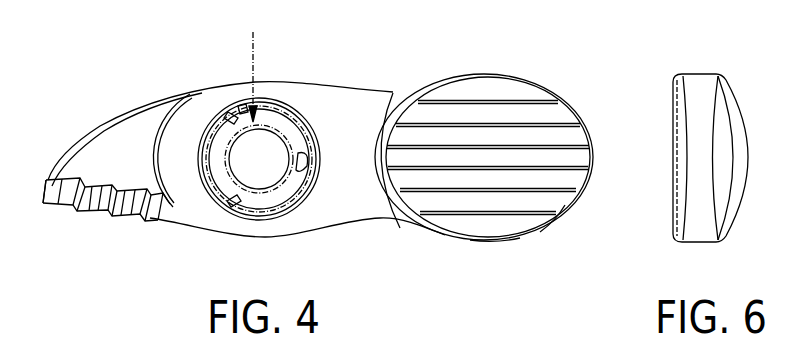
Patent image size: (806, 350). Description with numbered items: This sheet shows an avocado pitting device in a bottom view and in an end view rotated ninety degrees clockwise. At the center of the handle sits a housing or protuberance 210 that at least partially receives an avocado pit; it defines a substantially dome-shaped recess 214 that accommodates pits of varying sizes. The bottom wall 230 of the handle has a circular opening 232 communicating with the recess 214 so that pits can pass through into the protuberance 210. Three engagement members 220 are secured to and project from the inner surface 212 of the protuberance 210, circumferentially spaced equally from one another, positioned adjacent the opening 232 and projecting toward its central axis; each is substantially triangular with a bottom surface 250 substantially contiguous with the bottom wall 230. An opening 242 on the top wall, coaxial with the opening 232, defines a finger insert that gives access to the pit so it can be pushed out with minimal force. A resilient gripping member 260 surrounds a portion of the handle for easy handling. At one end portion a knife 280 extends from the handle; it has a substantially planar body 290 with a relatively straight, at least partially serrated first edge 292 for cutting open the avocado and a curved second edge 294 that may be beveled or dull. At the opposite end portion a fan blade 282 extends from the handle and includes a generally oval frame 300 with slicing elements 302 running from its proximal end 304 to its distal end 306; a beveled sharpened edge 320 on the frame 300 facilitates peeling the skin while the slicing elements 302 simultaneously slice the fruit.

In FIG. 4, the protuberance 210 is at (263, 117).
In FIG. 6, the protuberance 210 is at (735, 110).
In FIG. 4, the inner surface 212 is at (288, 127).
In FIG. 4, the recess 214 is at (255, 65).
In FIG. 4, the engagement members 220 is at (228, 120).
In FIG. 4, the bottom wall 230 is at (240, 105).
In FIG. 4, the opening 232 is at (245, 205).
In FIG. 4, the opening 242 is at (273, 183).
In FIG. 4, the bottom surface 250 is at (292, 180).
In FIG. 4, the gripping member 260 is at (208, 107).
In FIG. 6, the gripping member 260 is at (740, 187).
In FIG. 4, the knife 280 is at (100, 220).
In FIG. 4, the fan blade 282 is at (562, 83).
In FIG. 4, the planar body 290 is at (90, 157).
In FIG. 4, the first edge 292 is at (52, 210).
In FIG. 4, the second edge 294 is at (107, 127).
In FIG. 4, the frame 300 is at (477, 75).
In FIG. 6, the frame 300 is at (702, 185).
In FIG. 4, the slicing elements 302 is at (493, 240).
In FIG. 4, the proximal end 304 is at (593, 158).
In FIG. 4, the distal end 306 is at (390, 100).
In FIG. 4, the sharpened edge 320 is at (578, 200).